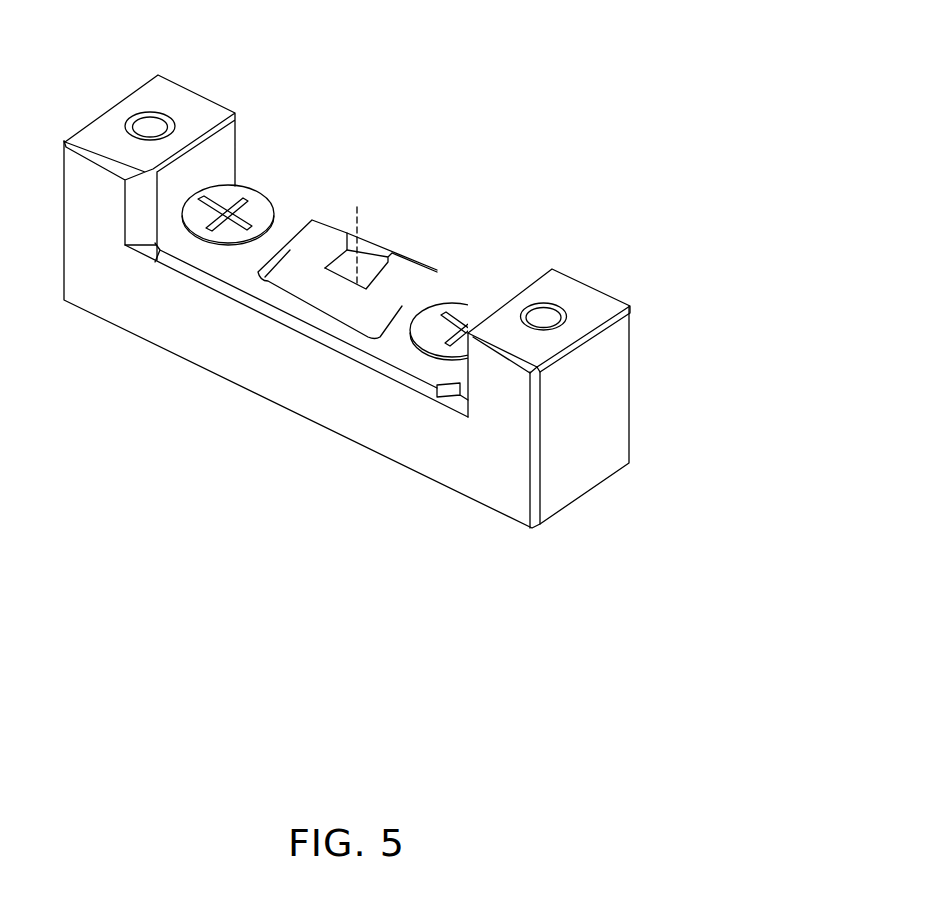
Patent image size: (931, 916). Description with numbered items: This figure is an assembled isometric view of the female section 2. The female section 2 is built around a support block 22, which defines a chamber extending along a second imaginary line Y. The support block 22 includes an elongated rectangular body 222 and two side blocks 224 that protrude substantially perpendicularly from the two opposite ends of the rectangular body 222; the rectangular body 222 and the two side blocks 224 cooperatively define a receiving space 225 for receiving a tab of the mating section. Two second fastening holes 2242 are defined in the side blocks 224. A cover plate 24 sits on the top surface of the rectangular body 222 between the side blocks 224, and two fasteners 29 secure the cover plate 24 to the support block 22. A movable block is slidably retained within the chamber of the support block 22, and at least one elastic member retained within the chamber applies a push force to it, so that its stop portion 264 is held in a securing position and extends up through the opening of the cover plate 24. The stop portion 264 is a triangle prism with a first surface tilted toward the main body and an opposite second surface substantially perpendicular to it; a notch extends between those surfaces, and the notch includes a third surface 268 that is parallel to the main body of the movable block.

The female section 2 is at (500, 56).
The support block 22 is at (577, 460).
The rectangular body 222 is at (258, 368).
The side blocks 224 is at (170, 145).
The second fastening holes 2242 is at (148, 125).
The cover plate 24 is at (457, 290).
The receiving space 225 is at (378, 213).
The fasteners 29 is at (262, 212).
The stop portion 264 is at (317, 243).
The third surface 268 is at (365, 258).
The second imaginary line Y is at (356, 233).